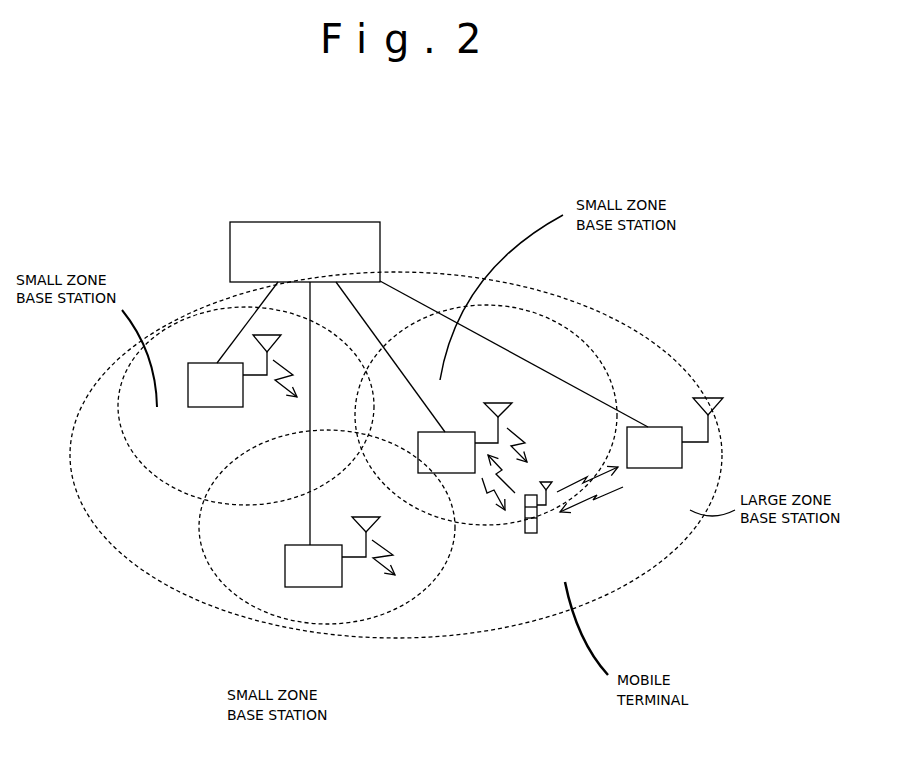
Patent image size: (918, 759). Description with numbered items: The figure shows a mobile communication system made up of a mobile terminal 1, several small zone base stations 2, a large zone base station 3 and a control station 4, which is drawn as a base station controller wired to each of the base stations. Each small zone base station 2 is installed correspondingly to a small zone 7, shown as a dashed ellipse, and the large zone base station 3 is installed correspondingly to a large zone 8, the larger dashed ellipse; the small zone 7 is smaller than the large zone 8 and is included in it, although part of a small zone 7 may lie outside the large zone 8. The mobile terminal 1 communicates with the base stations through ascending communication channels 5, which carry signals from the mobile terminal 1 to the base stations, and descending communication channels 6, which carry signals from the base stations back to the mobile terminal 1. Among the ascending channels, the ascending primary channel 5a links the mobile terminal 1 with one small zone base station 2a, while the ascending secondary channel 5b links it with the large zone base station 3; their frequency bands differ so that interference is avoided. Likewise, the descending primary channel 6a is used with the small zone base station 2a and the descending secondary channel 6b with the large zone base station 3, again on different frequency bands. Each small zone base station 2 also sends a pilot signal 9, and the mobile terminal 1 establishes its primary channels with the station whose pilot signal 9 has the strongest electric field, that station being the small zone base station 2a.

The mobile terminal 1 is at (538, 533).
The small zone base station 2 is at (188, 388).
The small zone base station 2a is at (462, 432).
The large zone base station 3 is at (657, 468).
The control station 4 is at (380, 245).
The ascending communication channel 5 is at (600, 511).
The ascending primary channel 5a is at (508, 483).
The ascending secondary channel 5b is at (610, 488).
The descending communication channel 6 is at (567, 542).
The descending primary channel 6a is at (488, 512).
The descending secondary channel 6b is at (582, 503).
The small zone 7 is at (533, 311).
The large zone 8 is at (522, 622).
The pilot signal 9 is at (273, 386).